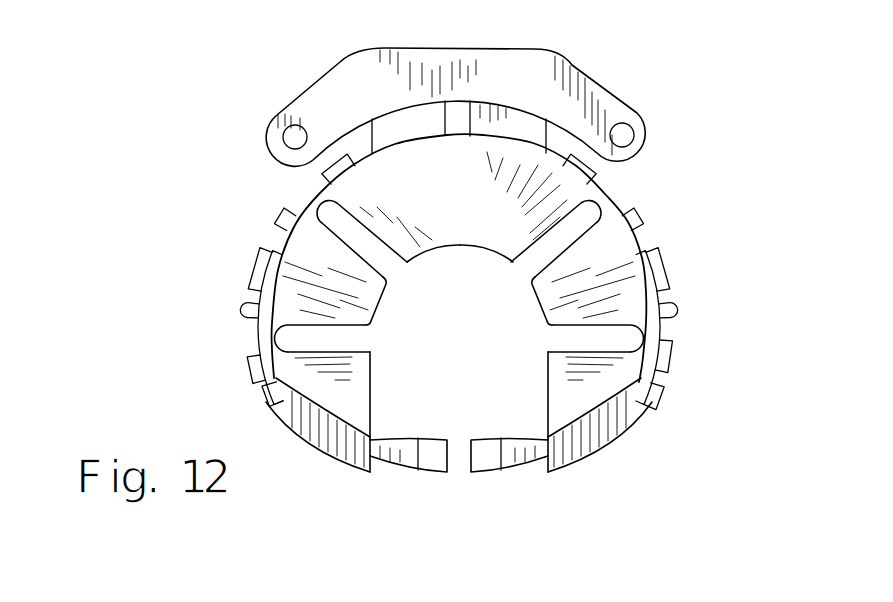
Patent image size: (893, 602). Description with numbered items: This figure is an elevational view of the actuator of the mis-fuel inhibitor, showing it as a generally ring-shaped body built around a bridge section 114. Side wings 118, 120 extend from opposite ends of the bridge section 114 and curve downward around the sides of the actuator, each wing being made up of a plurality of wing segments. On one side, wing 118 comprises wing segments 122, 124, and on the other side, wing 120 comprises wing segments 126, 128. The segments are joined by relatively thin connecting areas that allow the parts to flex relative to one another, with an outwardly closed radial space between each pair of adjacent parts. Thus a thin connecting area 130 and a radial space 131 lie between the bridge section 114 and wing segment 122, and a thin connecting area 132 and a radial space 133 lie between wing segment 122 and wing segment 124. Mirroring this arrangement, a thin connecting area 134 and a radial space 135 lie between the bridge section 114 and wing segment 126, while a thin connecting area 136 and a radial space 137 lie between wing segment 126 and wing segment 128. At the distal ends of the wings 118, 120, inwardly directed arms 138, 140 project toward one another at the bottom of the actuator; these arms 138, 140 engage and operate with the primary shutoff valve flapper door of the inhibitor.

The bridge section 114 is at (412, 187).
The side wing 118 is at (216, 270).
The side wing 120 is at (615, 472).
The wing segment 122 is at (323, 259).
The wing segment 124 is at (338, 383).
The wing segment 126 is at (598, 264).
The wing segment 128 is at (583, 383).
The connecting area 130 is at (313, 200).
The radial space 131 is at (388, 268).
The connecting area 132 is at (268, 340).
The radial space 133 is at (353, 340).
The connecting area 134 is at (603, 193).
The radial space 135 is at (530, 268).
The connecting area 136 is at (645, 336).
The radial space 137 is at (563, 338).
The inwardly directed arm 138 is at (408, 457).
The inwardly directed arm 140 is at (512, 459).